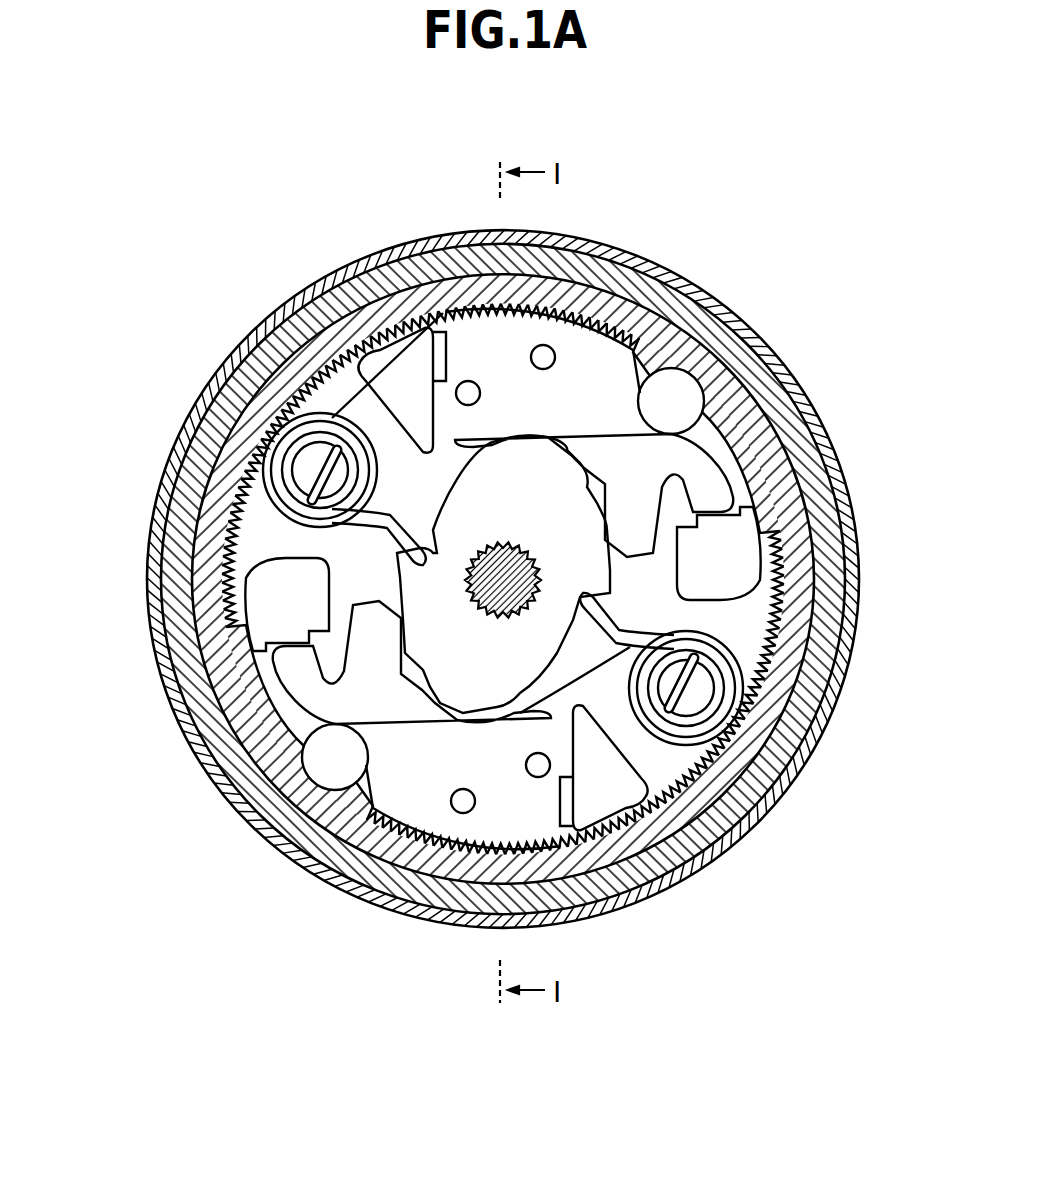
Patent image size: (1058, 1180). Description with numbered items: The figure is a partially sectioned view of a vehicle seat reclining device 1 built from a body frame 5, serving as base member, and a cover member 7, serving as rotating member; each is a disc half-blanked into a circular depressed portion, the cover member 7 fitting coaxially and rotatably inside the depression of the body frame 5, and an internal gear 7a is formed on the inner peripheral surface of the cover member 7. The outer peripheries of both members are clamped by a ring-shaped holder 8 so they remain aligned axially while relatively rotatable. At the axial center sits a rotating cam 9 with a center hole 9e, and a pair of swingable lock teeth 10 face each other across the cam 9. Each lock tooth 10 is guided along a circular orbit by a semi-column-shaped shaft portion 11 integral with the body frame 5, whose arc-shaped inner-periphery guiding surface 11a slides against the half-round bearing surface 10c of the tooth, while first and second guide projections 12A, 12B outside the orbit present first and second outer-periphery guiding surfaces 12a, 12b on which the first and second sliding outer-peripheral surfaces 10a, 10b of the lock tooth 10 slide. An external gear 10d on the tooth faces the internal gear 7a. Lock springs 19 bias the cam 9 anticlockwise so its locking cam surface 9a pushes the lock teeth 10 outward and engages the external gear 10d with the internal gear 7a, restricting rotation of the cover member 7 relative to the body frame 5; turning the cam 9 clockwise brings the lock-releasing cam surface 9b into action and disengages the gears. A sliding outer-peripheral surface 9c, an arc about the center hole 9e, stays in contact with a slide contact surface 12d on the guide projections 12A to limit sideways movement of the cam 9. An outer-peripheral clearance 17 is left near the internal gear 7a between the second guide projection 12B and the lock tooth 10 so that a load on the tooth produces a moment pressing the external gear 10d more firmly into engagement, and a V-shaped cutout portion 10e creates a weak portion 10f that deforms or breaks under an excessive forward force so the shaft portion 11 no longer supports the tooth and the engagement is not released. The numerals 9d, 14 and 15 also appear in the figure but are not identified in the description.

The vehicle seat reclining device 1 is at (810, 878).
The body frame 5 is at (705, 296).
The cover member 7 is at (540, 298).
The internal gear 7a is at (493, 832).
The ring-shaped holder 8 is at (764, 336).
The cam 9 is at (535, 542).
The locking cam surface 9a is at (500, 714).
The lock-releasing cam surface 9b is at (400, 582).
The sliding outer-peripheral surface 9c is at (370, 594).
The hub spring seat 9d is at (433, 528).
The center hole 9e is at (520, 588).
The lock tooth 10 is at (596, 456).
The first sliding outer-peripheral surface 10a is at (392, 573).
The second sliding outer-peripheral surface 10b is at (577, 737).
The bearing surface 10c is at (300, 775).
The external gear 10d is at (483, 856).
The cutout portion 10e is at (312, 712).
The weak portion 10f is at (316, 734).
The shaft portion 11 is at (652, 417).
The inner-periphery guiding surface 11a is at (306, 745).
The first guide projection 12A is at (688, 576).
The second guide projection 12B is at (375, 394).
The first outer-periphery guiding surface 12a is at (344, 603).
The second outer-periphery guiding surface 12b is at (628, 605).
The slide contact surface 12d is at (427, 695).
The spring holder 14 is at (327, 427).
The shaft 15 is at (487, 545).
The outer-peripheral clearance 17 is at (645, 855).
The lock spring 19 is at (307, 467).